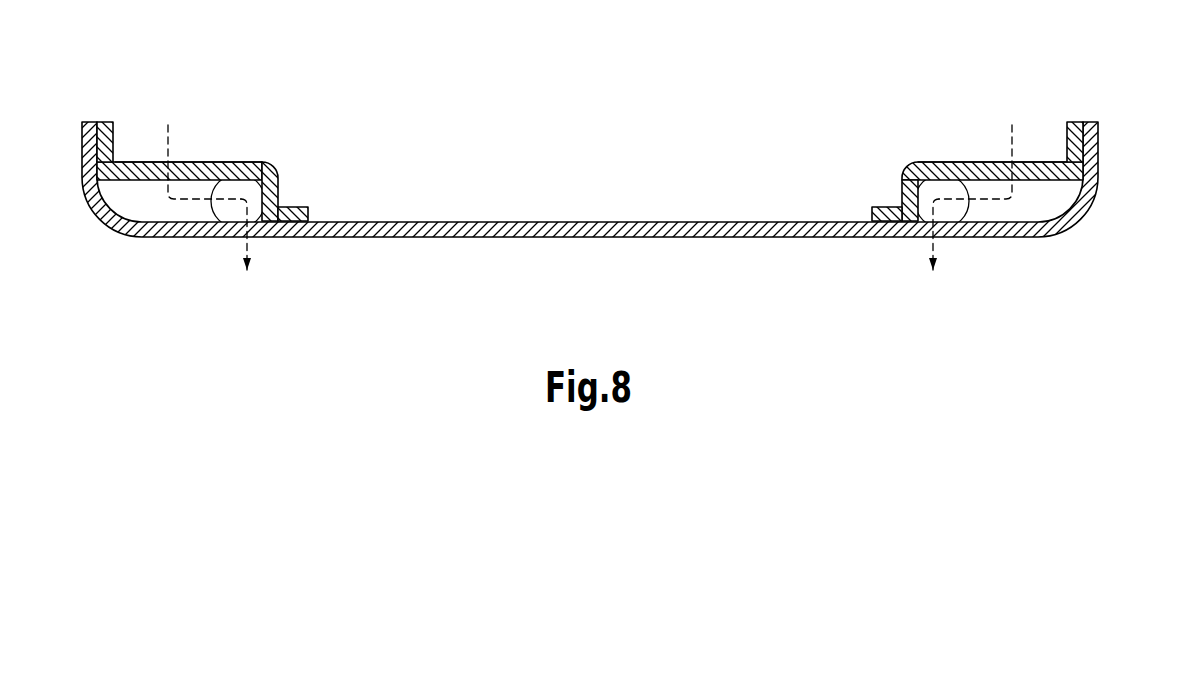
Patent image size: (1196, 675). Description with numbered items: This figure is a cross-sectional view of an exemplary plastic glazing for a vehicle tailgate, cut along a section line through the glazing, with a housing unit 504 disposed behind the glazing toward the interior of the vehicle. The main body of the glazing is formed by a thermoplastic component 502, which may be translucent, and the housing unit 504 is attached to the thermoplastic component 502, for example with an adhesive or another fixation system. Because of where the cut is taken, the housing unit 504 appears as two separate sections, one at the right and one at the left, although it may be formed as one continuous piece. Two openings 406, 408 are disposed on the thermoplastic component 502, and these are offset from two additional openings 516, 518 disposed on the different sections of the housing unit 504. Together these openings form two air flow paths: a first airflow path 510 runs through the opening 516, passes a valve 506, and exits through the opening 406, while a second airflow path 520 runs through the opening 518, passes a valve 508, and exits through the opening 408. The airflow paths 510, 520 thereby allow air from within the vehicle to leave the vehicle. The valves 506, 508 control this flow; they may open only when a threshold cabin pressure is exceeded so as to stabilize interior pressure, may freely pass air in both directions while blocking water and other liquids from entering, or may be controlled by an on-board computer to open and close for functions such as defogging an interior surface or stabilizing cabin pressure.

The opening 406 is at (944, 240).
The opening 408 is at (236, 240).
The thermoplastic component 502 is at (90, 185).
The housing unit 504 is at (105, 123).
The valve 506 is at (912, 168).
The valve 508 is at (263, 163).
The first airflow path 510 is at (1012, 125).
The opening 516 is at (1003, 157).
The opening 518 is at (176, 158).
The second airflow path 520 is at (168, 125).